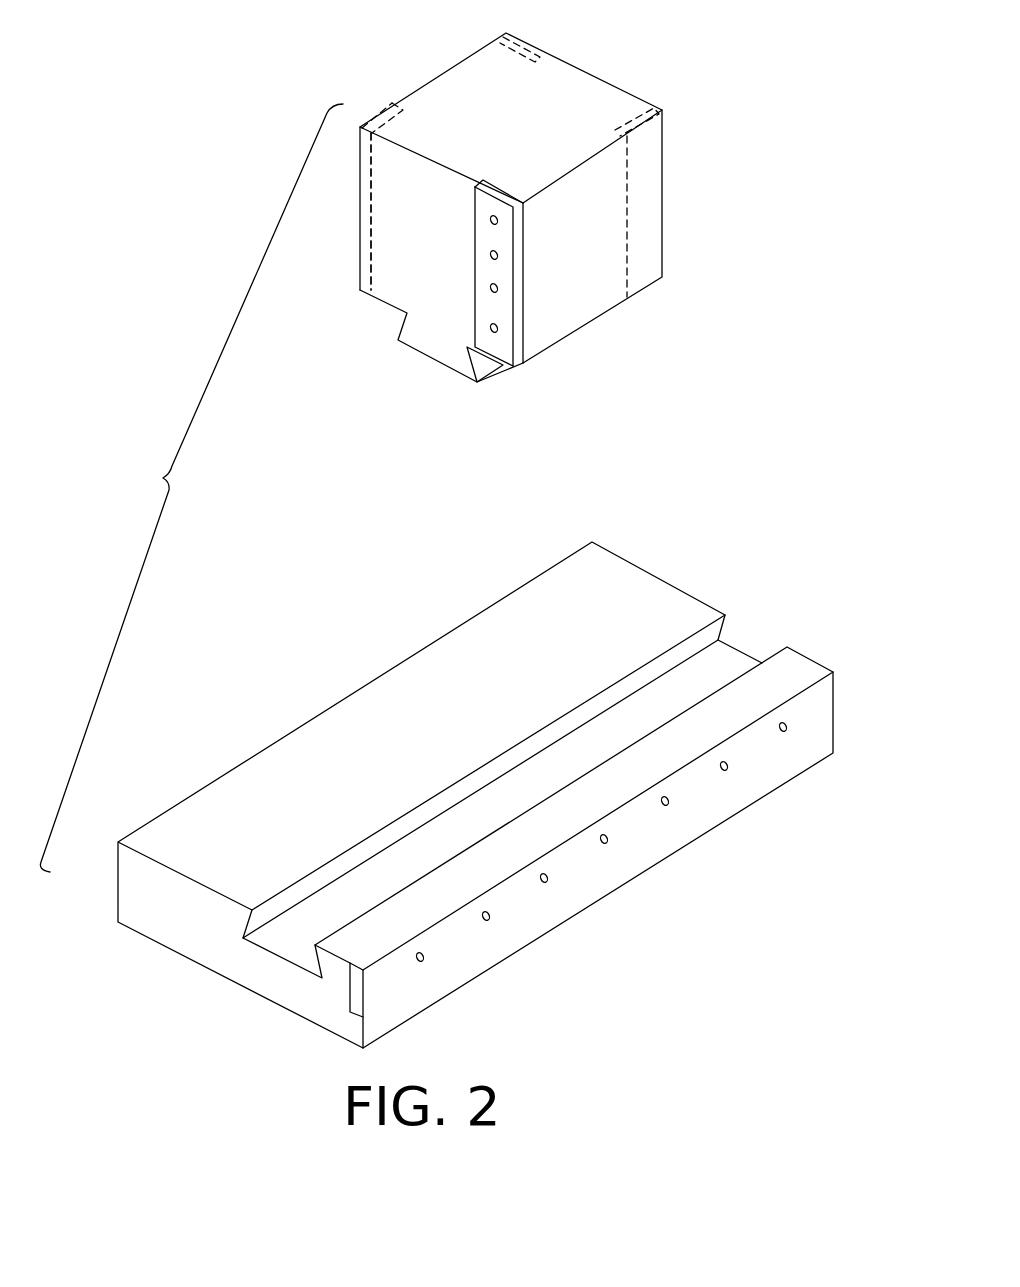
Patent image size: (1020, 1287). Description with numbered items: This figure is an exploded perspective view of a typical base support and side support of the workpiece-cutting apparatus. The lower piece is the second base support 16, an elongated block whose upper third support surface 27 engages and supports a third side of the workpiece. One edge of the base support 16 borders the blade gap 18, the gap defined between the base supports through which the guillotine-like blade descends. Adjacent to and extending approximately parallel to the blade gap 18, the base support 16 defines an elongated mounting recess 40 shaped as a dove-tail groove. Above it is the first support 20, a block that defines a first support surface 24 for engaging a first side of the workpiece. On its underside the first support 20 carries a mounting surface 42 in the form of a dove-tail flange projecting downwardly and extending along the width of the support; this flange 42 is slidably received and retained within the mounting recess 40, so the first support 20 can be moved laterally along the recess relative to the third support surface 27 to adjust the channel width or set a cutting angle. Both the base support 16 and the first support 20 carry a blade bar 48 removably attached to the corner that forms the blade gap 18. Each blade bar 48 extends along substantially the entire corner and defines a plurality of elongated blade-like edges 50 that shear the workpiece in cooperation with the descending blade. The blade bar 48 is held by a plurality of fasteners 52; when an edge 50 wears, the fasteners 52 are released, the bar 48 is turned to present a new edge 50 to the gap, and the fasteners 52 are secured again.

The second base support 16 is at (655, 575).
The blade gap 18 is at (466, 925).
The first support 20 is at (580, 92).
The first support surface 24 is at (397, 253).
The third support surface 27 is at (370, 733).
The mounting recess 40 is at (728, 663).
The mounting surface 42 is at (423, 337).
The blade bar 48 is at (506, 32).
The blade-like edge 50 is at (473, 328).
The fastener 52 is at (495, 322).